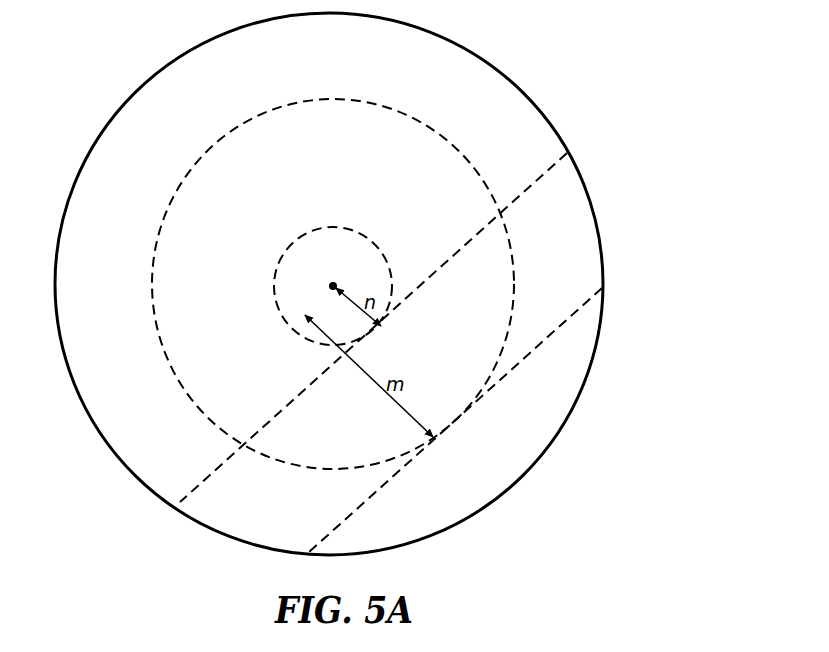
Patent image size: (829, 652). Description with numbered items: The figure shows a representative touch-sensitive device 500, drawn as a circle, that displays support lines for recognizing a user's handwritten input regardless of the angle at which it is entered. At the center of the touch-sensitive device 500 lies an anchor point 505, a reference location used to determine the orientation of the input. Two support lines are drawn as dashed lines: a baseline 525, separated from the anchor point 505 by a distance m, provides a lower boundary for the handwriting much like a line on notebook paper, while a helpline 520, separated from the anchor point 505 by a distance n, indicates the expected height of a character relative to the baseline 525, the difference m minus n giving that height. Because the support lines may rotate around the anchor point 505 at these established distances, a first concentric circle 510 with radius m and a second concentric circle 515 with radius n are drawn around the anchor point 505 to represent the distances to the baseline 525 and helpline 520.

The touch-sensitive device 500 is at (596, 118).
The anchor point 505 is at (331, 285).
The first concentric circle 510 is at (192, 164).
The second concentric circle 515 is at (357, 232).
The helpline 520 is at (190, 494).
The baseline 525 is at (352, 517).